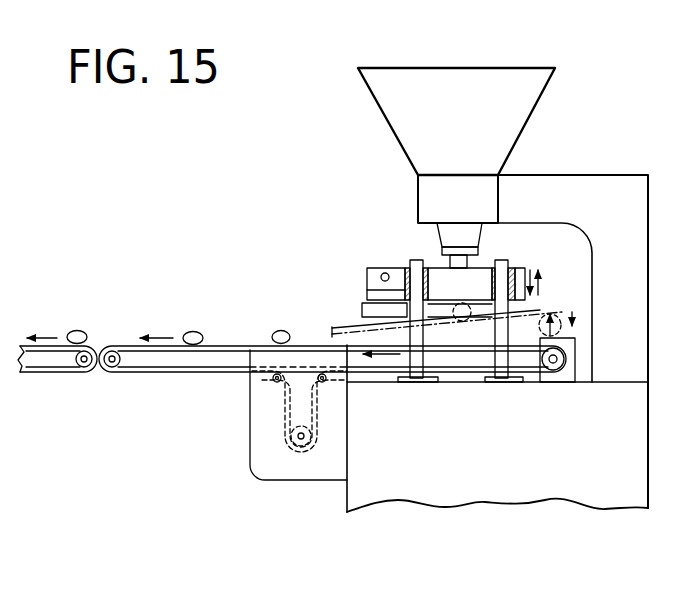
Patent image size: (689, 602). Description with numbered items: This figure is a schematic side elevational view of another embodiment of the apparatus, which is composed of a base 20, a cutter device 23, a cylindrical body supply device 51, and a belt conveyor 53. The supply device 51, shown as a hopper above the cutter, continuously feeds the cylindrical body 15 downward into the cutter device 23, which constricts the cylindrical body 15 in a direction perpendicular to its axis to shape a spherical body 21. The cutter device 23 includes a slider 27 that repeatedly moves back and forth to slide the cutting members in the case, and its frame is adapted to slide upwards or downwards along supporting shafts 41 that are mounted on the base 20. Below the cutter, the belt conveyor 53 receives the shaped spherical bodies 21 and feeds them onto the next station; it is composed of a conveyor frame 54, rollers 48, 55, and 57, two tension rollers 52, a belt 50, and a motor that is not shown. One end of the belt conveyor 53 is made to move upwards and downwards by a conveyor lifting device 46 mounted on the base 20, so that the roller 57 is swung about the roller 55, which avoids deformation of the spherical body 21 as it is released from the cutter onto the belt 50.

The cylindrical body 15 is at (447, 262).
The base 20 is at (648, 508).
The spherical body 21 is at (462, 320).
The cutter device 23 is at (521, 264).
The slider 27 is at (385, 273).
The supporting shafts 41 is at (416, 365).
The conveyor lifting device 46 is at (566, 360).
The roller 48 is at (301, 440).
The belt 50 is at (243, 344).
The cylindrical body supply device 51 is at (522, 150).
The tension rollers 52 is at (275, 382).
The belt conveyor 53 is at (548, 304).
The conveyor frame 54 is at (328, 482).
The roller 55 is at (114, 367).
The roller 57 is at (556, 363).